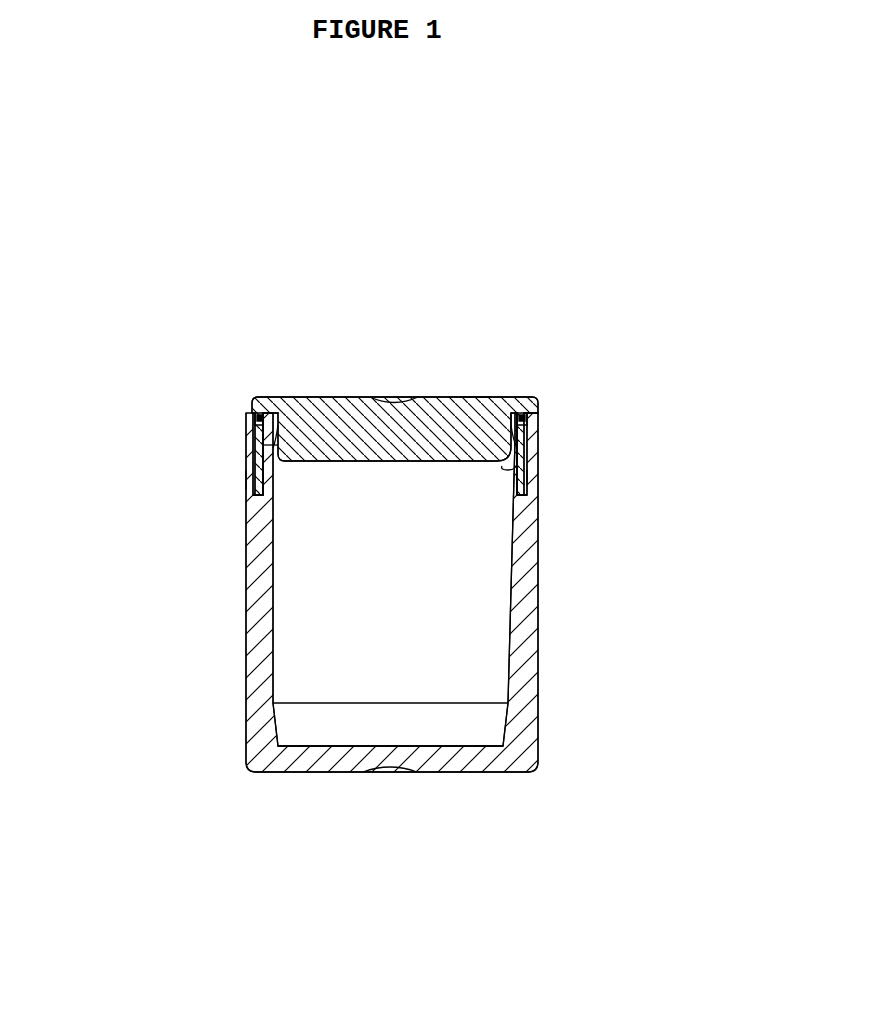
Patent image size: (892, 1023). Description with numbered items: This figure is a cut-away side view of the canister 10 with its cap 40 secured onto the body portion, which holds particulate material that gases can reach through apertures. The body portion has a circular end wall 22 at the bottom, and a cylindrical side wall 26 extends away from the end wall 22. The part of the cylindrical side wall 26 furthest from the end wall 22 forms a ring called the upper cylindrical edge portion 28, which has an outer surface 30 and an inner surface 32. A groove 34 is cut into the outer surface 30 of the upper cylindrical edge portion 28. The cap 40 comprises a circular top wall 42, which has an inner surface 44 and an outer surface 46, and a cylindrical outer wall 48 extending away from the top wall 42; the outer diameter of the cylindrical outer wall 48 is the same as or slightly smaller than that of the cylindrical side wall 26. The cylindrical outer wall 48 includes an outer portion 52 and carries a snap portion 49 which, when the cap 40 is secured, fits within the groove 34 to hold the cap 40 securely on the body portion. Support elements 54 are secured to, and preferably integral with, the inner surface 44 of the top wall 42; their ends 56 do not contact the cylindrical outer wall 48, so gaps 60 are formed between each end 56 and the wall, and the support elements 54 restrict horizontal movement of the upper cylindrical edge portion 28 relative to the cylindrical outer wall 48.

The canister 10 is at (459, 607).
The circular end wall 22 is at (452, 762).
The cylindrical side wall 26 is at (530, 612).
The upper cylindrical edge portion 28 is at (545, 438).
The outer surface 30 is at (538, 475).
The inner surface 32 is at (520, 468).
The groove 34 is at (253, 477).
The cap 40 is at (307, 397).
The circular top wall 42 is at (347, 398).
The inner surface 44 is at (513, 410).
The outer surface 46 is at (473, 395).
The cylindrical outer wall 48 is at (522, 417).
The snap portion 49 is at (253, 462).
The outer portion 52 is at (250, 451).
The support element 54 is at (253, 423).
The end 56 is at (253, 445).
The gap 60 is at (547, 412).